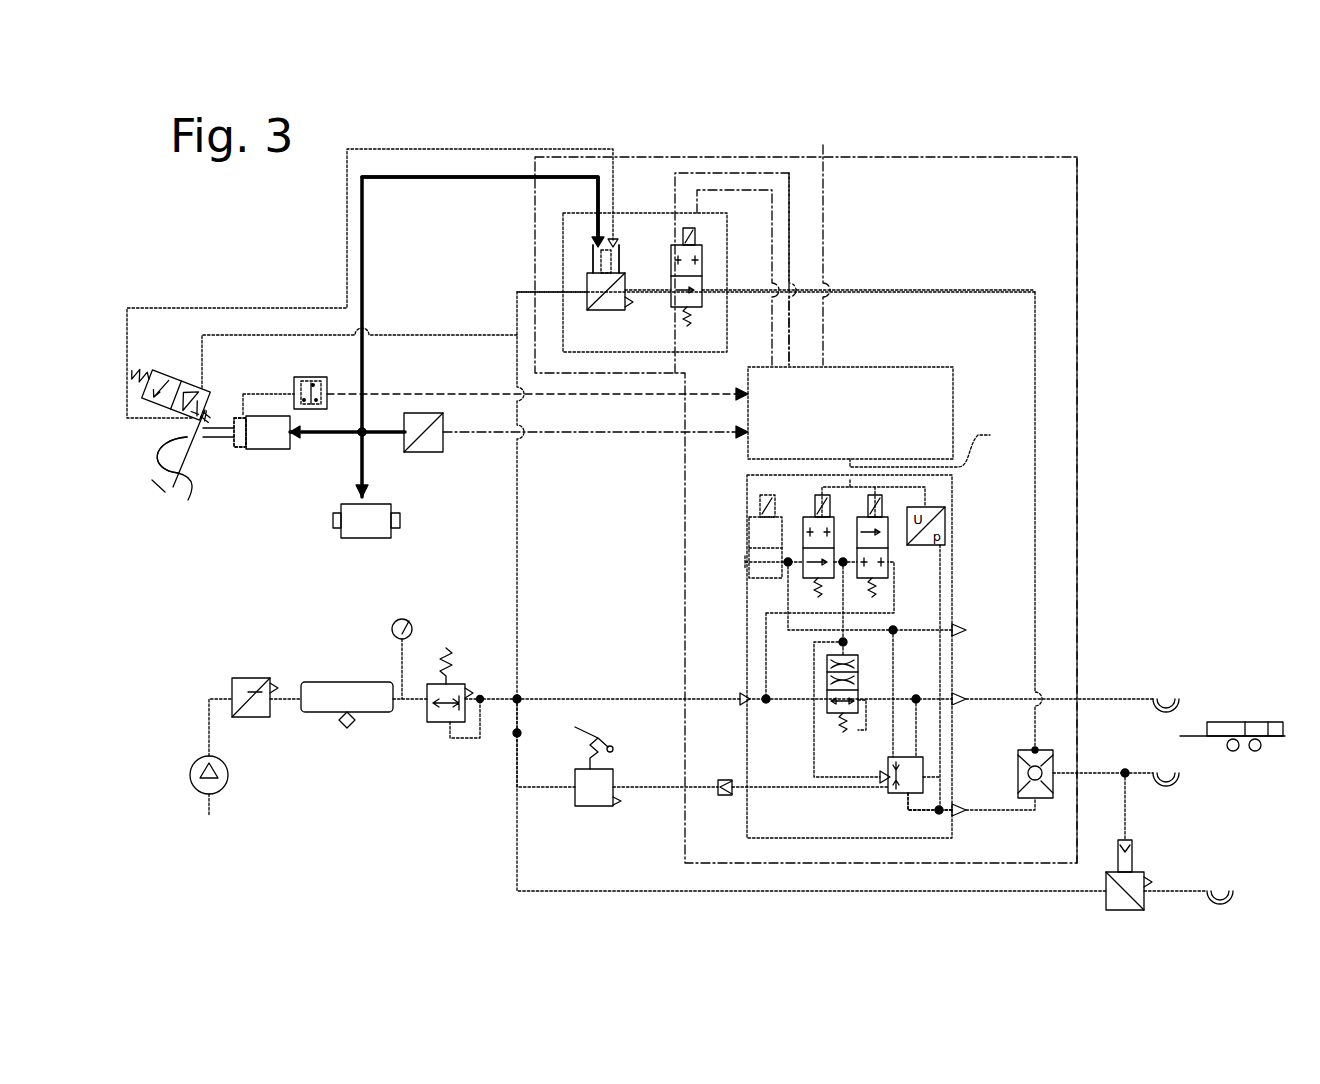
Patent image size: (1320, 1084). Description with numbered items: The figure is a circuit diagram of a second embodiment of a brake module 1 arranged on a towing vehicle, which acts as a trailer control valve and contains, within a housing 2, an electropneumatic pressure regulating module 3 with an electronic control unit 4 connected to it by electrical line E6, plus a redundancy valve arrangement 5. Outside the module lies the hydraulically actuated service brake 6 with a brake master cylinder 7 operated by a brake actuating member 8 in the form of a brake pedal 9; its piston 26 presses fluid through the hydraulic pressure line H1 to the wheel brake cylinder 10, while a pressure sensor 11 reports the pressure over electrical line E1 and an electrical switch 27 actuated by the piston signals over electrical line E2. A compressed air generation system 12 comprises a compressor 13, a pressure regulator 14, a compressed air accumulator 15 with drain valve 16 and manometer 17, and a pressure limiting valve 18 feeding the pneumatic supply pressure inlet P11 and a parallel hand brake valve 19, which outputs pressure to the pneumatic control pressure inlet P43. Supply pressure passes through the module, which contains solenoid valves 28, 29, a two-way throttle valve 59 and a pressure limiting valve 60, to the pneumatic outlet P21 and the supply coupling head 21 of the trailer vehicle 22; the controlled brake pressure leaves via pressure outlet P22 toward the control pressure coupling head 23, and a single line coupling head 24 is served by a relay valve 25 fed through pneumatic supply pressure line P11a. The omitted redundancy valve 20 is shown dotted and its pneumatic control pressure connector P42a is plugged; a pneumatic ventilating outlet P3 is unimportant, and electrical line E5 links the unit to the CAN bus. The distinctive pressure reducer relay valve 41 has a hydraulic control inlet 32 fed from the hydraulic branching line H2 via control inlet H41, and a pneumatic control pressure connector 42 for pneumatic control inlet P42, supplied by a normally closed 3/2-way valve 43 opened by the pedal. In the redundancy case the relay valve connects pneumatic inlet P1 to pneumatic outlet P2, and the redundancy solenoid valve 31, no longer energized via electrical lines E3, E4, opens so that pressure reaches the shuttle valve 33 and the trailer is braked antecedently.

The brake module 1 is at (1097, 235).
The housing 2 is at (1077, 300).
The electropneumatic pressure regulating module 3 is at (955, 500).
The electronic control unit 4 is at (935, 397).
The redundancy valve arrangement 5 is at (740, 267).
The hydraulically actuated service brake 6 is at (226, 527).
The brake master cylinder 7 is at (270, 450).
The brake actuating member 8 is at (185, 467).
The brake pedal 9 is at (176, 496).
The wheel brake cylinder 10 is at (372, 532).
The pressure sensor 11 is at (420, 452).
The compressed air generation system 12 is at (346, 785).
The compressor 13 is at (222, 782).
The pressure regulator 14 is at (250, 680).
The compressed air accumulator 15 is at (333, 690).
The drain valve 16 is at (356, 724).
The manometer 17 is at (394, 624).
The pressure limiting valve 18 is at (440, 725).
The hand brake valve 19 is at (590, 798).
The redundancy valve 20 is at (758, 517).
The supply coupling head 21 is at (1176, 697).
The trailer vehicle 22 is at (1242, 719).
The control pressure coupling head 23 is at (1180, 781).
The single line coupling head 24 is at (1222, 896).
The relay valve 25 is at (1138, 870).
The piston 26 is at (246, 449).
The electrical switch 27 is at (306, 380).
The solenoid valve 28 is at (803, 580).
The solenoid valve 29 is at (888, 556).
The redundancy solenoid valve 31 is at (673, 308).
The hydraulic control inlet 32 is at (592, 256).
The shuttle valve 33 is at (1053, 762).
The pressure reducer relay valve 41 is at (605, 311).
The pneumatic control pressure connector 42 is at (620, 258).
The 3/2-way valve 43 is at (153, 372).
The two-way throttle valve 59 is at (832, 712).
The pressure limiting valve 60 is at (900, 793).
The hydraulic pressure line H1 is at (332, 436).
The hydraulic branching line H2 is at (366, 318).
The control inlet H41 is at (483, 212).
The pneumatic inlet P1 is at (585, 290).
The pneumatic outlet P2 is at (625, 292).
The pneumatic ventilating outlet P3 is at (962, 628).
The pneumatic supply pressure inlet P11 is at (738, 695).
The pneumatic supply pressure line P11a is at (566, 895).
The pneumatic outlet P21 is at (982, 697).
The pressure outlet P22 is at (992, 812).
The pneumatic control inlet P42 is at (617, 245).
The pneumatic control pressure connector P42a is at (745, 560).
The pneumatic control pressure inlet P43 is at (737, 780).
The electrical line E1 is at (590, 434).
The electrical line E2 is at (437, 392).
The electrical line E3 is at (732, 273).
The electrical line E4 is at (789, 300).
The electrical line E5 is at (823, 248).
The electrical line E6 is at (935, 439).